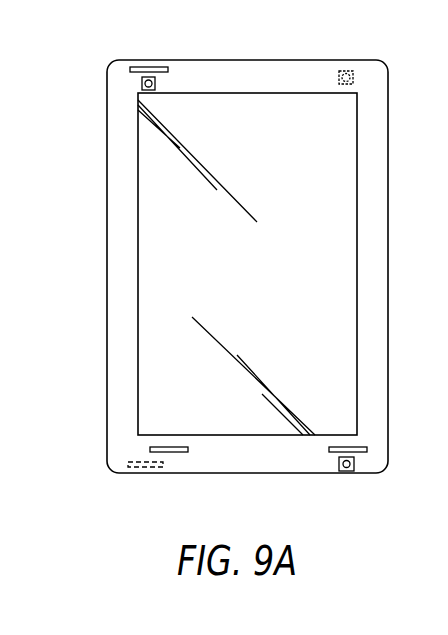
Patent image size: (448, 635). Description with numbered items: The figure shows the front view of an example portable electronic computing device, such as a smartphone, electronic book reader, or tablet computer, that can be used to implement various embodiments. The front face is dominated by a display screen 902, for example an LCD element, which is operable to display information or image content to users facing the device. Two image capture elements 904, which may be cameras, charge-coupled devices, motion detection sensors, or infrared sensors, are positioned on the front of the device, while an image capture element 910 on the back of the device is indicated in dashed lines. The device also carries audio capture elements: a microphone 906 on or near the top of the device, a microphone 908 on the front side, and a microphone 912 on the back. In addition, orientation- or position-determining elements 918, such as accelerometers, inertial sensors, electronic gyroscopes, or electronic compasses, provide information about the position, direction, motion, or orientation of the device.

The display screen 902 is at (140, 318).
The image capture elements 904 is at (142, 84).
The microphone 906 is at (158, 67).
The microphone 908 is at (365, 449).
The image capture element 910 is at (345, 70).
The microphone 912 is at (175, 452).
The orientation- or position-determining elements 918 is at (146, 467).